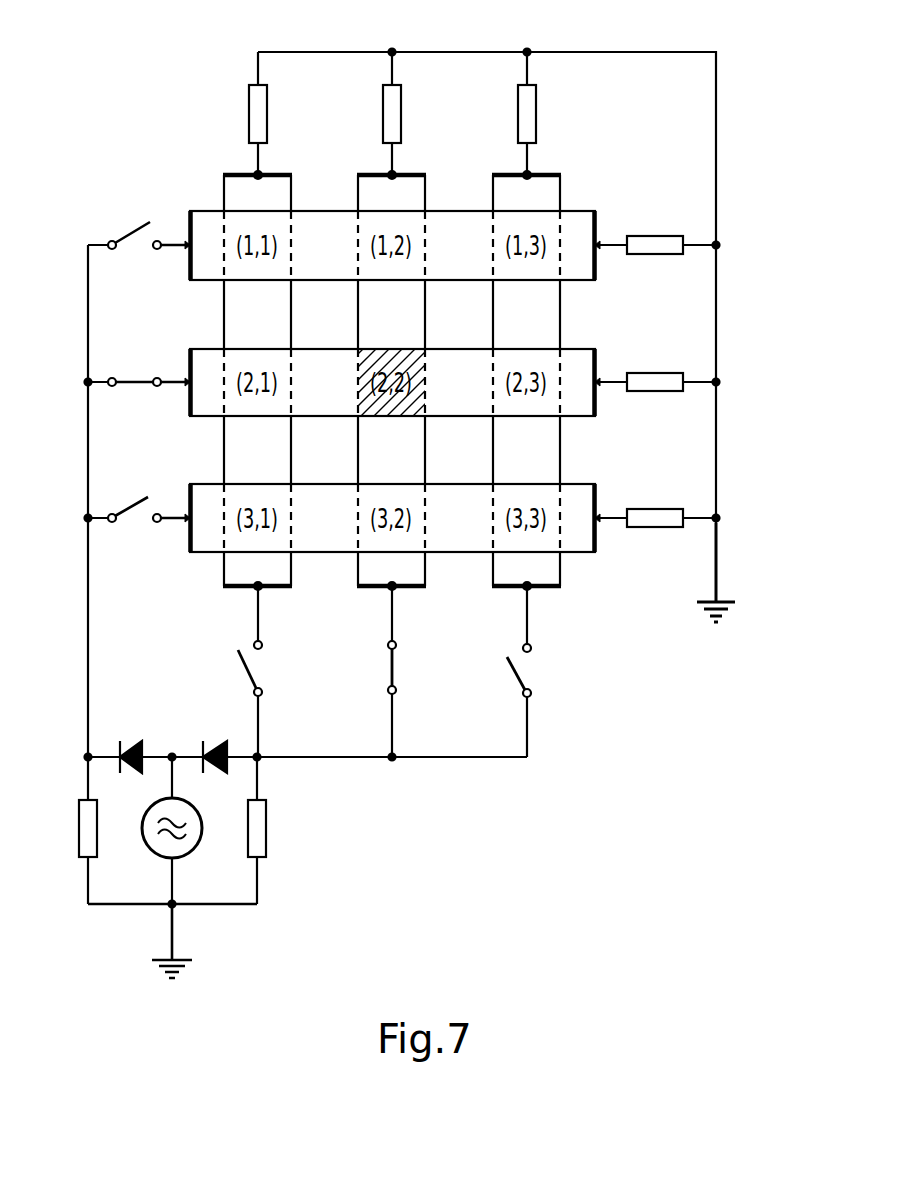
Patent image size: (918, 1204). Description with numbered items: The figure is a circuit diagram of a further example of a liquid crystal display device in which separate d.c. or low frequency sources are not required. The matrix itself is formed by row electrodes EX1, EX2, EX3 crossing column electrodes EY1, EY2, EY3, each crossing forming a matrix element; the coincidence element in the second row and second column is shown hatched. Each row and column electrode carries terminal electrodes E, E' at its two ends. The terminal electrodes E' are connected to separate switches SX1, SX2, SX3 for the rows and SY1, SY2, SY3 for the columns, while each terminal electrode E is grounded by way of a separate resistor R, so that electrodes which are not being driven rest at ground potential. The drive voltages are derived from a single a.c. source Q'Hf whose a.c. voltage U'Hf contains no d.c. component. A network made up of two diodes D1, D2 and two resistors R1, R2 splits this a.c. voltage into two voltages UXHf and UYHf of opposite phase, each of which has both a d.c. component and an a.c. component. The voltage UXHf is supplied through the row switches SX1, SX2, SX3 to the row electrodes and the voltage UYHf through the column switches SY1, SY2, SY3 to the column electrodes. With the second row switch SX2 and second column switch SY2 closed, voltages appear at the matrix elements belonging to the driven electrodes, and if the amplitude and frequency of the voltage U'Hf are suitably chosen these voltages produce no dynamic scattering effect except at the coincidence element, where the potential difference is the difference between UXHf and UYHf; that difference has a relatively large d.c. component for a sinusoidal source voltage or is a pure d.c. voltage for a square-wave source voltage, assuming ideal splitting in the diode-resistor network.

The terminal electrode E is at (421, 340).
The terminal electrode E' is at (360, 411).
The column electrode EY1 is at (281, 192).
The column electrode EY2 is at (415, 192).
The column electrode EY3 is at (550, 192).
The row electrode EX1 is at (582, 282).
The row electrode EX2 is at (582, 420).
The row electrode EX3 is at (582, 556).
The switch SX1 is at (149, 255).
The switch SX2 is at (149, 402).
The switch SX3 is at (149, 529).
The switch SY1 is at (274, 671).
The switch SY2 is at (416, 671).
The switch SY3 is at (543, 671).
The resistor R is at (484, 289).
The resistor R1 is at (70, 852).
The resistor R2 is at (276, 830).
The diode D1 is at (132, 738).
The diode D2 is at (215, 738).
The a.c. voltage U'Hf is at (194, 830).
The a.c. voltage source Q'Hf is at (128, 791).
The row drive voltage UXHf is at (57, 586).
The column drive voltage UYHf is at (311, 781).